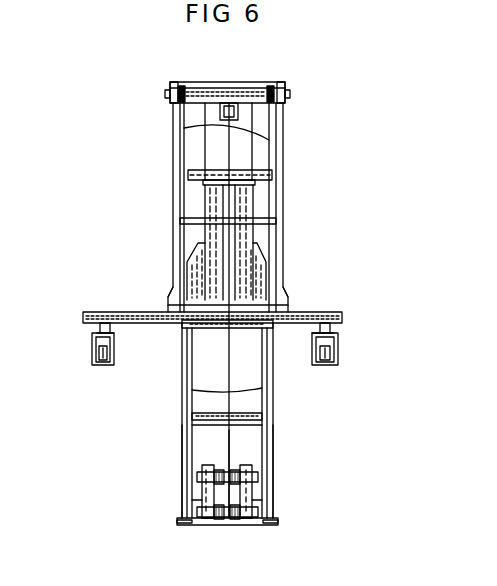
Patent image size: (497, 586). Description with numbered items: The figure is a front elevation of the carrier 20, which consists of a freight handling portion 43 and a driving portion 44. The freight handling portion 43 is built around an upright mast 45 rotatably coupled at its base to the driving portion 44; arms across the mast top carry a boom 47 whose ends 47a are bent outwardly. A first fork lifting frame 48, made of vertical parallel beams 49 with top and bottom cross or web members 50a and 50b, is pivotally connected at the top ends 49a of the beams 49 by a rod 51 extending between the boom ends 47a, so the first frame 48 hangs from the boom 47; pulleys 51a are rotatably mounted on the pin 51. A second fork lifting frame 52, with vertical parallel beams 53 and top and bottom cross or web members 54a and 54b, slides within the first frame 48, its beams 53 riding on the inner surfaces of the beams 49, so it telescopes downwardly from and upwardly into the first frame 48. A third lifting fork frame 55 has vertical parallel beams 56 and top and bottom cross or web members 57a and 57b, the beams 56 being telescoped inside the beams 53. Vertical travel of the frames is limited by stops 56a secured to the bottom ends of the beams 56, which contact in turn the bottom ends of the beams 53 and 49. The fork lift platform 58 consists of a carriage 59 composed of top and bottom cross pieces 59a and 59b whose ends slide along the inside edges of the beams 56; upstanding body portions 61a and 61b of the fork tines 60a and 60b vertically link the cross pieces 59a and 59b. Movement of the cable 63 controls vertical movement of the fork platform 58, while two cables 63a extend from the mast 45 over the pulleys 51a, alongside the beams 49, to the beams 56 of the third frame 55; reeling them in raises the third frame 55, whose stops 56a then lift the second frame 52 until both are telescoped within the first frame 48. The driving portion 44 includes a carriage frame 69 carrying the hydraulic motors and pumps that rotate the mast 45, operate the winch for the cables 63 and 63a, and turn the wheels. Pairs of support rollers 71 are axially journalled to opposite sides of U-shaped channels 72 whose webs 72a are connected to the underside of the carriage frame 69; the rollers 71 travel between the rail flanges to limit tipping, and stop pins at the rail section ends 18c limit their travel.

The carrier 20 is at (315, 65).
The freight handling portion 43 is at (340, 265).
The driving portion 44 is at (88, 342).
The upright mast 45 is at (203, 199).
The boom 47 is at (198, 82).
The boom ends 47a is at (168, 88).
The first fork lifting frame 48 is at (292, 135).
The vertical parallel beams 49 is at (280, 178).
The top ends of beams 49a is at (283, 110).
The top cross or web member 50a is at (190, 178).
The bottom cross or web member 50b is at (190, 290).
The rod 51 is at (165, 95).
The pulleys 51a is at (183, 85).
The second fork lifting frame 52 is at (293, 285).
The vertical parallel beams 53 is at (275, 388).
The top cross or web member 54a is at (190, 220).
The bottom cross or web member 54b is at (210, 420).
The third lifting fork frame 55 is at (288, 462).
The vertical parallel beams 56 is at (188, 455).
The stops 56a is at (180, 525).
The top cross or web member 57a is at (200, 332).
The bottom cross or web member 57b is at (195, 516).
The fork lift platform 58 is at (283, 500).
The carriage 59 is at (182, 492).
The top cross piece 59a is at (232, 475).
The bottom cross piece 59b is at (228, 518).
The fork tine 60a is at (205, 526).
The fork tine 60b is at (250, 526).
The upstanding body portion 61a is at (205, 502).
The upstanding body portion 61b is at (248, 500).
The cable 63 is at (200, 420).
The cables 63a is at (185, 128).
The carriage frame 69 is at (83, 315).
The support rollers 71 is at (98, 365).
The U-shaped channels 72 is at (92, 348).
The webs 72a is at (112, 335).
The rail section ends 18c is at (104, 365).